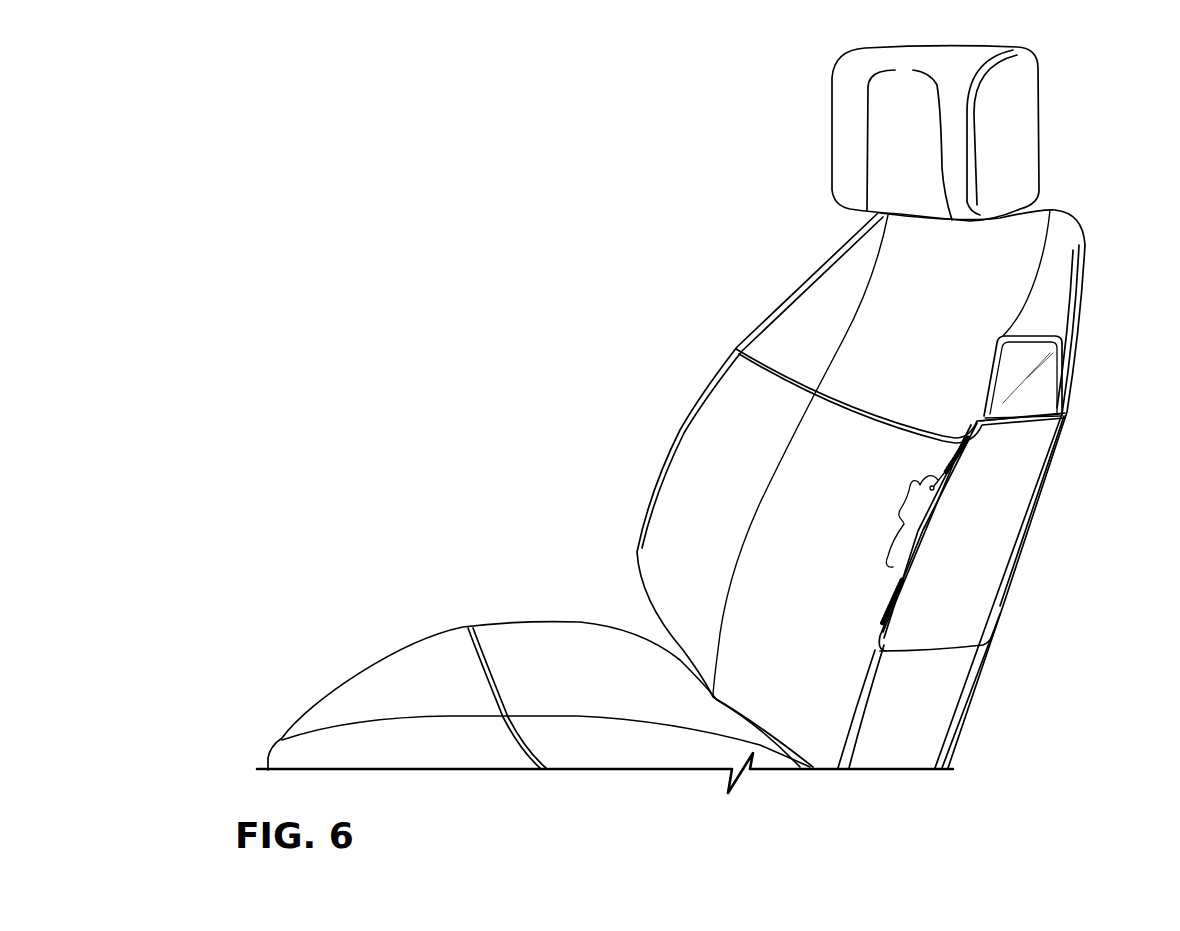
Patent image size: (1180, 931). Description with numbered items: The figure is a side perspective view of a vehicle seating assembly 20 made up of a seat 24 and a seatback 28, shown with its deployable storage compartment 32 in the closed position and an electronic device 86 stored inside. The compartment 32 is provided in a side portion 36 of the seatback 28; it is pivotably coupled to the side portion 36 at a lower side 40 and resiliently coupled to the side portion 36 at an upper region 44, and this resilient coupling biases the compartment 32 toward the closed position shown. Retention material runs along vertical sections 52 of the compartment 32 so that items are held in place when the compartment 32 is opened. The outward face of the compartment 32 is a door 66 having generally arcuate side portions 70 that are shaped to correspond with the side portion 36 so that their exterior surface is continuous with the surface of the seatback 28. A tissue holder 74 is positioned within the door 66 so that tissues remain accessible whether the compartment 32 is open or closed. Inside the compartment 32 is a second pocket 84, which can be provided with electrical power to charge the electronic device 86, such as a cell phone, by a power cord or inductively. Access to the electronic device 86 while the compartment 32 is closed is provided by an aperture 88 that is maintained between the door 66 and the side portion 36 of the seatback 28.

The vehicle seating assembly 20 is at (490, 318).
The seat 24 is at (538, 650).
The seatback 28 is at (890, 298).
The compartment 32 is at (1016, 546).
The side portion 36 is at (1050, 318).
The lower side 40 is at (920, 650).
The upper region 44 is at (1018, 414).
The vertical sections 52 is at (873, 630).
The door 66 is at (1014, 607).
The generally arcuate side portions 70 is at (963, 432).
The tissue holder 74 is at (893, 573).
The second pocket 84 is at (974, 417).
The electronic device 86 is at (1030, 368).
The aperture 88 is at (1040, 418).